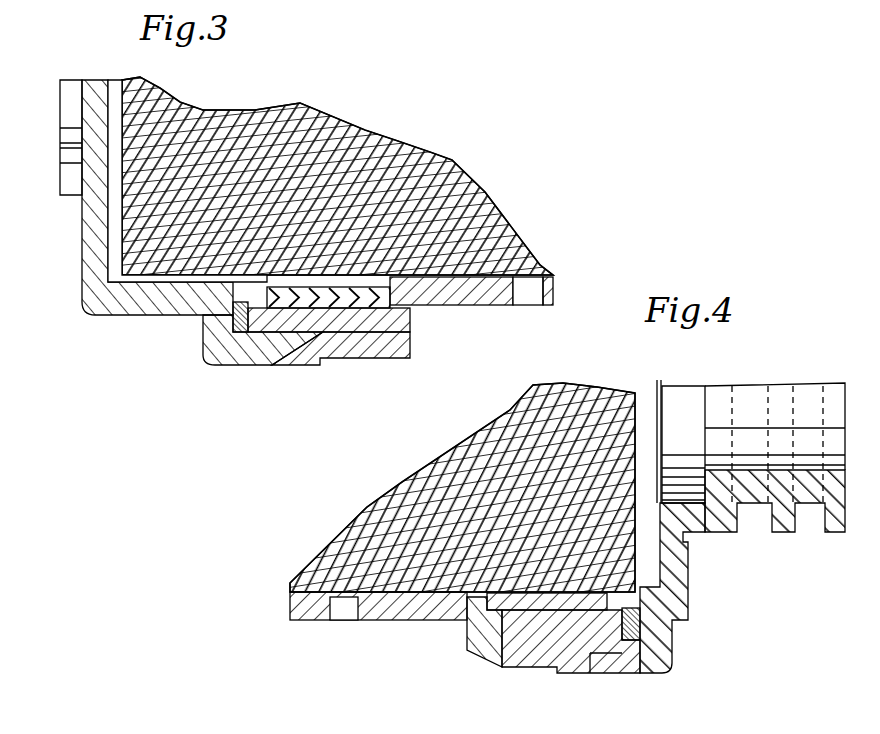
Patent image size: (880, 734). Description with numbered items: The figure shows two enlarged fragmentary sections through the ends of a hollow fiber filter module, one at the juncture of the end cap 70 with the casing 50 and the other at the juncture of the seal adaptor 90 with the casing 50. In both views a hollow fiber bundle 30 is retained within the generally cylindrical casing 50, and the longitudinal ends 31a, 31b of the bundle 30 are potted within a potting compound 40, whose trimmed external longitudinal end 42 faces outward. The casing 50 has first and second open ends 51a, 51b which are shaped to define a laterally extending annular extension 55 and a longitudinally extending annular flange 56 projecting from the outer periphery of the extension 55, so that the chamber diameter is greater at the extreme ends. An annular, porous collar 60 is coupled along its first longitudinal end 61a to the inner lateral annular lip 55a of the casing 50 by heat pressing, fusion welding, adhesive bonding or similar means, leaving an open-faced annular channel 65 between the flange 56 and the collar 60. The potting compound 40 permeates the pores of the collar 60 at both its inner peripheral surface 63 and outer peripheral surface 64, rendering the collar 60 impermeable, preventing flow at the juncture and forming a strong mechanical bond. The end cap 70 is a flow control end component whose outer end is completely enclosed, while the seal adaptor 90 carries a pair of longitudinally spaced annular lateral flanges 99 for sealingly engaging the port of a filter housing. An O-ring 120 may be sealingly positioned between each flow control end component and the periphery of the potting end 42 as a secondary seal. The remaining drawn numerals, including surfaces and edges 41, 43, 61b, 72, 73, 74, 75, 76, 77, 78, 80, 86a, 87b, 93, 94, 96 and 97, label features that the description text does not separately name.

In FIG. 3, the hollow fiber bundle 30 is at (496, 200).
In FIG. 4, the hollow fiber bundle 30 is at (370, 558).
In FIG. 3, the longitudinal end of the hollow fiber bundle 31a is at (110, 197).
In FIG. 4, the longitudinal end of the hollow fiber bundle 31b is at (660, 470).
In FIG. 3, the potting compound 40 is at (279, 112).
In FIG. 4, the potting compound 40 is at (545, 392).
In FIG. 3, the bottom surface 41 is at (462, 240).
In FIG. 4, the bottom surface 41 is at (405, 497).
In FIG. 3, the external longitudinal end of the trimmed potting composition 42 is at (125, 274).
In FIG. 4, the external longitudinal end of the trimmed potting composition 42 is at (695, 470).
In FIG. 3, the lower block 43 is at (110, 316).
In FIG. 4, the lower block 43 is at (395, 619).
In FIG. 4, the casing 50 is at (290, 620).
In FIG. 3, the first open end of the casing 51a is at (286, 362).
In FIG. 4, the second open end of the casing 51b is at (565, 682).
In FIG. 3, the annular extension 55 is at (400, 340).
In FIG. 4, the annular extension 55 is at (478, 640).
In FIG. 3, the inner lateral annular lip 55a is at (410, 312).
In FIG. 4, the inner lateral annular lip 55a is at (492, 658).
In FIG. 3, the longitudinally extending annular flange 56 is at (380, 345).
In FIG. 4, the longitudinally extending annular flange 56 is at (553, 685).
In FIG. 3, the annular porous collar 60 is at (372, 278).
In FIG. 3, the first longitudinal end of the collar 61a is at (405, 328).
In FIG. 4, the first longitudinal end of the collar 61a is at (470, 622).
In FIG. 3, the rounded edge 61b is at (214, 360).
In FIG. 4, the rounded edge 61b is at (670, 603).
In FIG. 3, the inner peripheral surface of the collar 63 is at (330, 278).
In FIG. 4, the inner peripheral surface of the collar 63 is at (590, 450).
In FIG. 3, the outer peripheral surface of the collar 64 is at (330, 345).
In FIG. 4, the outer peripheral surface of the collar 64 is at (525, 677).
In FIG. 3, the open-faced annular channel 65 is at (372, 355).
In FIG. 4, the open-faced annular channel 65 is at (585, 665).
In FIG. 3, the end cap 70 is at (92, 101).
In FIG. 3, the surface 72 is at (185, 320).
In FIG. 3, the surface 73 is at (160, 318).
In FIG. 3, the surface 74 is at (200, 322).
In FIG. 3, the curve 75 is at (217, 250).
In FIG. 3, the surface 76 is at (273, 360).
In FIG. 3, the surface 77 is at (217, 372).
In FIG. 3, the edge 78 is at (204, 345).
In FIG. 4, the member 80 is at (95, 733).
In FIG. 4, the member 86a is at (178, 733).
In FIG. 4, the member 87b is at (273, 733).
In FIG. 4, the seal adaptor 90 is at (832, 405).
In FIG. 4, the block 93 is at (690, 550).
In FIG. 4, the surface 94 is at (695, 578).
In FIG. 4, the surface 96 is at (638, 662).
In FIG. 4, the block 97 is at (662, 657).
In FIG. 4, the annular lateral flanges 99 is at (835, 533).
In FIG. 3, the O-ring 120 is at (250, 330).
In FIG. 4, the O-ring 120 is at (647, 612).